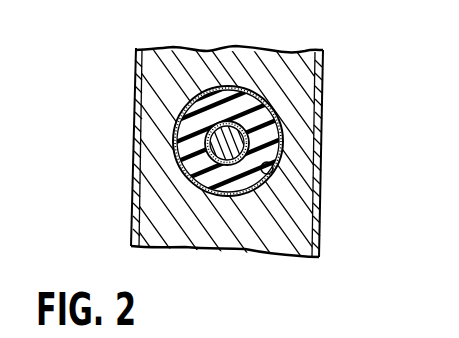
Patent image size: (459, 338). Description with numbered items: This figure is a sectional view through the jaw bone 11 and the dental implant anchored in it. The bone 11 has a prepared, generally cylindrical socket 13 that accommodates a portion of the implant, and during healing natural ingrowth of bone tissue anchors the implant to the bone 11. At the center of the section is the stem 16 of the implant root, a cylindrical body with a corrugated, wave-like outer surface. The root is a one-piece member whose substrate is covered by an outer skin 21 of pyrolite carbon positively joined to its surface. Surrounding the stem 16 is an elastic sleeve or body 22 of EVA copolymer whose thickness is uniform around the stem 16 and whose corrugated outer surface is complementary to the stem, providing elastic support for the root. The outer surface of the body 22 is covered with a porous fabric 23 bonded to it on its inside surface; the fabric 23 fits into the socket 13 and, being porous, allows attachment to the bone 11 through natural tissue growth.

The jaw bone 11 is at (272, 62).
The socket 13 is at (180, 142).
The sleeve 22 is at (262, 118).
The stem 16 is at (228, 143).
The outer skin 21 is at (229, 162).
The porous fabric 23 is at (272, 171).